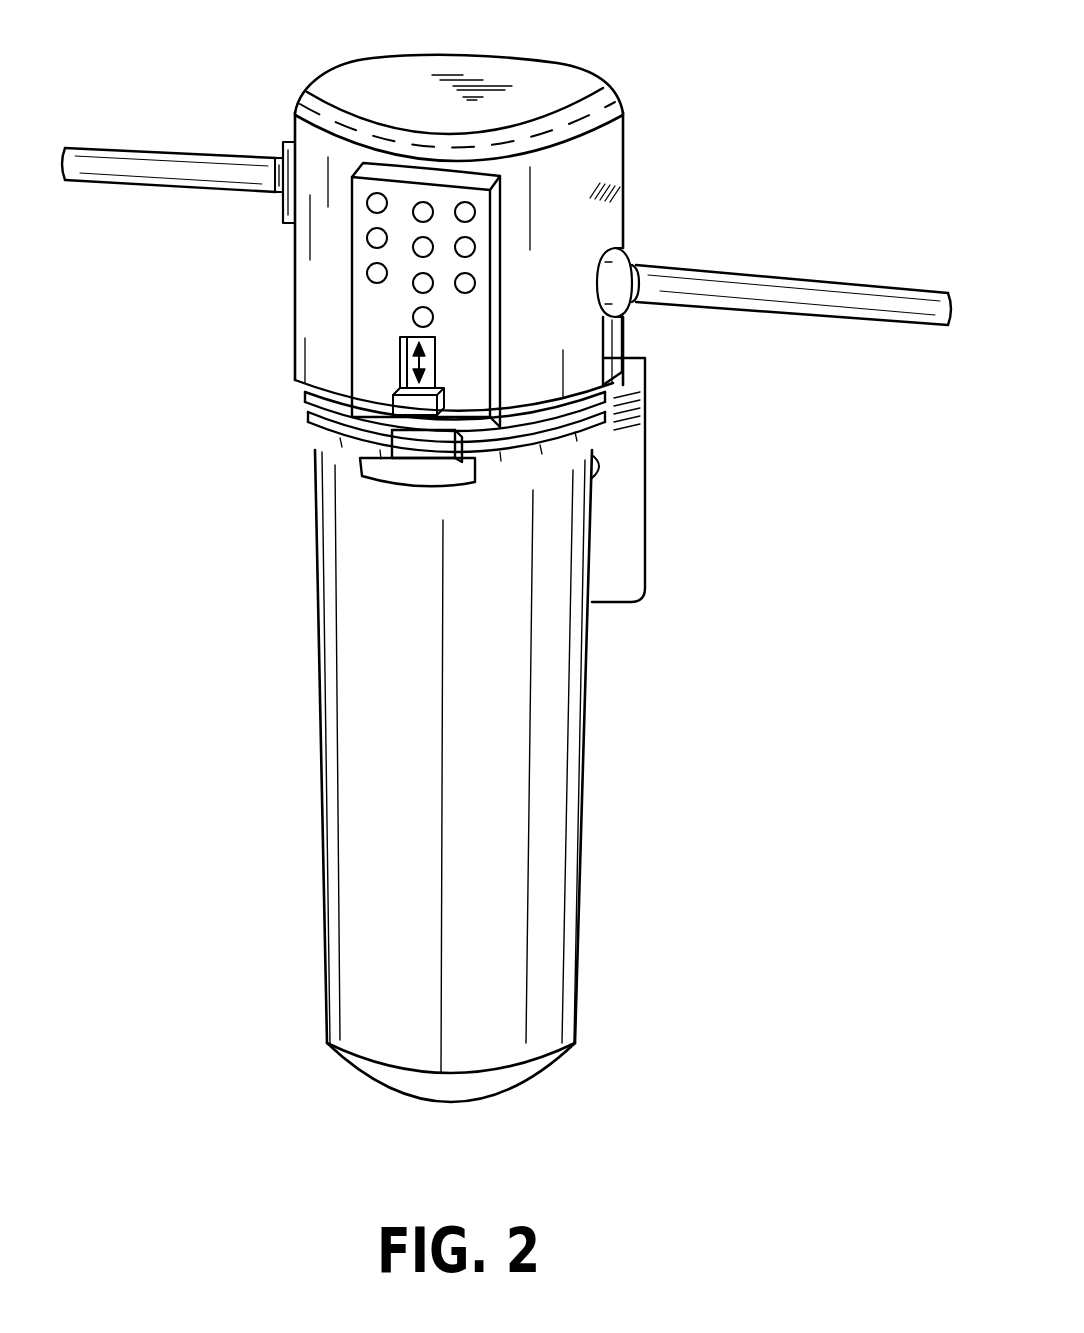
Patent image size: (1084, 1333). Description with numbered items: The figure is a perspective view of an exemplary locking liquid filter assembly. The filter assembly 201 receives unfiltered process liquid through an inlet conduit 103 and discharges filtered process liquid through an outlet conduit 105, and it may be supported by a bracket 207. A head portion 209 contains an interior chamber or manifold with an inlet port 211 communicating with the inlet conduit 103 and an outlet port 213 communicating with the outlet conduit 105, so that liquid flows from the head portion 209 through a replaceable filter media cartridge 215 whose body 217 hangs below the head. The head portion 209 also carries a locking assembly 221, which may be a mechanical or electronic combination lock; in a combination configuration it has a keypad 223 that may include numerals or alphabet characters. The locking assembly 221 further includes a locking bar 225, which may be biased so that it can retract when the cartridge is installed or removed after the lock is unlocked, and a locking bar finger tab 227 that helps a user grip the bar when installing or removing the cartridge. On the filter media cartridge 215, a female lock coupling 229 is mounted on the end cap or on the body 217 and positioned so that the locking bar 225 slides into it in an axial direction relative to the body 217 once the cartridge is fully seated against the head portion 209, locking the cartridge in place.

The filter assembly 201 is at (665, 205).
The inlet conduit 103 is at (790, 294).
The outlet conduit 105 is at (133, 170).
The bracket 207 is at (628, 495).
The head portion 209 is at (392, 85).
The inlet port 211 is at (634, 252).
The outlet port 213 is at (285, 148).
The filter media cartridge 215 is at (358, 818).
The body 217 is at (553, 637).
The locking assembly 221 is at (360, 313).
The keypad 223 is at (356, 232).
The locking bar 225 is at (405, 452).
The locking bar finger tab 227 is at (395, 400).
The female lock coupling 229 is at (405, 455).